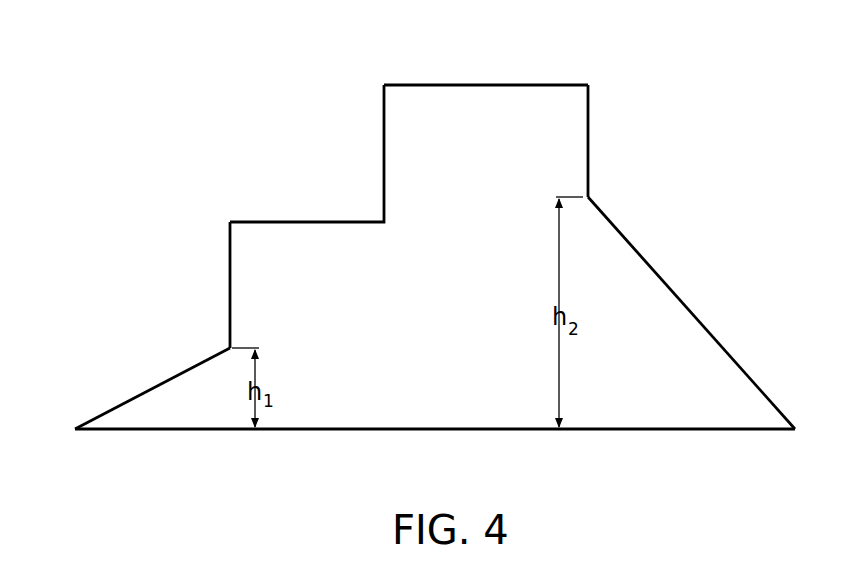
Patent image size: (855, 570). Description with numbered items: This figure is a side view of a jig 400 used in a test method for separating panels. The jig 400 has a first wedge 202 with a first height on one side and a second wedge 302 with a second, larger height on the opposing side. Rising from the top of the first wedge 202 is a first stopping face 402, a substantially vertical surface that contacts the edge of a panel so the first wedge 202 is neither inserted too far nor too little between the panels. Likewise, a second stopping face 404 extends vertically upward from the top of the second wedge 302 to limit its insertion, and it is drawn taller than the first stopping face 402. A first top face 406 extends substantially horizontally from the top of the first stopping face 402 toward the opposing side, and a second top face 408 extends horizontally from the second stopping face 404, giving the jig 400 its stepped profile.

The jig 400 is at (112, 100).
The first wedge 202 is at (150, 388).
The first stopping face 402 is at (230, 251).
The first top face 406 is at (303, 222).
The second top face 408 is at (472, 85).
The second stopping face 404 is at (588, 152).
The second wedge 302 is at (693, 312).